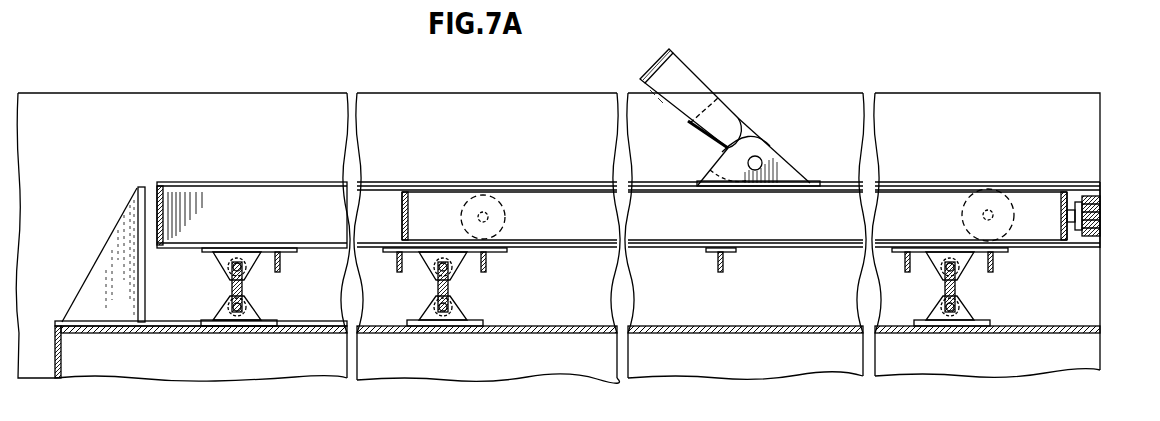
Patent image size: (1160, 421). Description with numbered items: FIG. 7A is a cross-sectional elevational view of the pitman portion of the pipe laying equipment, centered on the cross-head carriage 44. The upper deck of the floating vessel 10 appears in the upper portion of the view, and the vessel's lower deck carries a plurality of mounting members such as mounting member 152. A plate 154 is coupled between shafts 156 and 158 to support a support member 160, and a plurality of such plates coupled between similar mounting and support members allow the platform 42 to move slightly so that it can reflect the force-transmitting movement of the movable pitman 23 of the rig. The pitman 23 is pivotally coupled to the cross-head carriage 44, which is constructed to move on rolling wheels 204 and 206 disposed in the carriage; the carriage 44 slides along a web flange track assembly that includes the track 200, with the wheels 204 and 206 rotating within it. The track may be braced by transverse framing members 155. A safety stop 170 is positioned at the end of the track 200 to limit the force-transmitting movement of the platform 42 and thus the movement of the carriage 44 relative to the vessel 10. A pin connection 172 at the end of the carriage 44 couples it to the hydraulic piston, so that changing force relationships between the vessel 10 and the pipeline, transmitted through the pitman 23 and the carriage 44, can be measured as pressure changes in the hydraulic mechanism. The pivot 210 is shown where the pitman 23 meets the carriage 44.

The vessel 10 is at (259, 93).
The pitman 23 is at (700, 86).
The platform 42 is at (556, 251).
The cross-head carriage 44 is at (912, 190).
The mounting member 152 is at (229, 326).
The plate 154 is at (247, 287).
The transverse framing member 155 is at (282, 268).
The shaft 156 is at (233, 307).
The shaft 158 is at (233, 267).
The support member 160 is at (233, 263).
The safety stop 170 is at (108, 240).
The pin connection 172 is at (1097, 191).
The track 200 is at (283, 197).
The rolling wheel 204 is at (505, 222).
The rolling wheel 206 is at (962, 212).
The pivot pin 210 is at (766, 152).